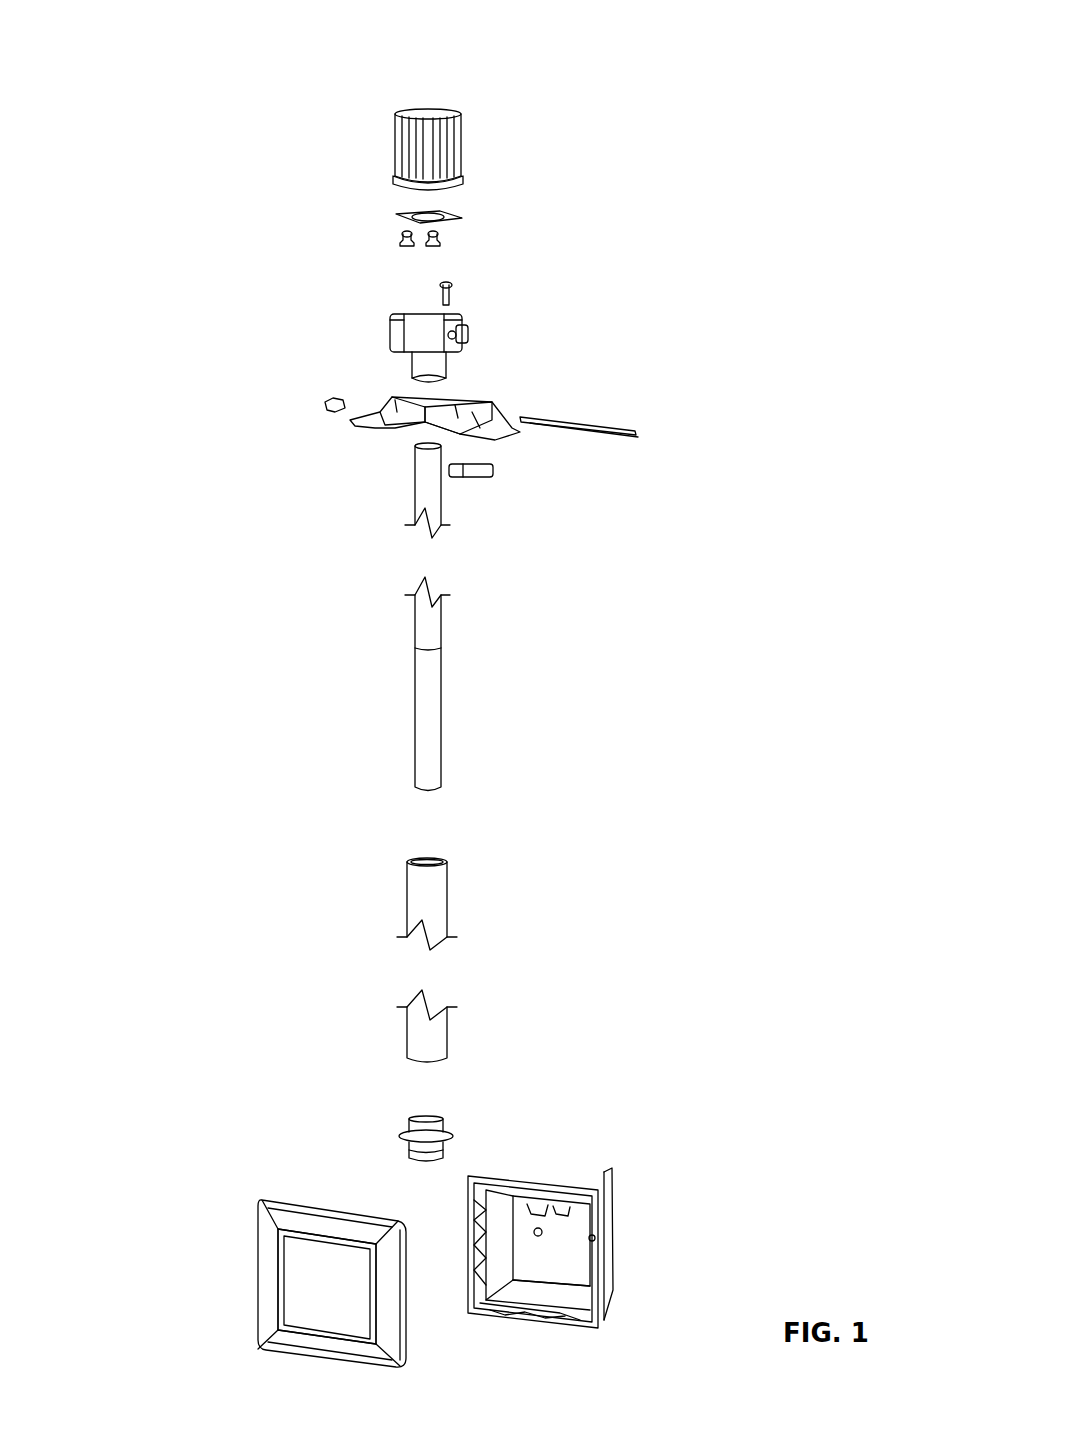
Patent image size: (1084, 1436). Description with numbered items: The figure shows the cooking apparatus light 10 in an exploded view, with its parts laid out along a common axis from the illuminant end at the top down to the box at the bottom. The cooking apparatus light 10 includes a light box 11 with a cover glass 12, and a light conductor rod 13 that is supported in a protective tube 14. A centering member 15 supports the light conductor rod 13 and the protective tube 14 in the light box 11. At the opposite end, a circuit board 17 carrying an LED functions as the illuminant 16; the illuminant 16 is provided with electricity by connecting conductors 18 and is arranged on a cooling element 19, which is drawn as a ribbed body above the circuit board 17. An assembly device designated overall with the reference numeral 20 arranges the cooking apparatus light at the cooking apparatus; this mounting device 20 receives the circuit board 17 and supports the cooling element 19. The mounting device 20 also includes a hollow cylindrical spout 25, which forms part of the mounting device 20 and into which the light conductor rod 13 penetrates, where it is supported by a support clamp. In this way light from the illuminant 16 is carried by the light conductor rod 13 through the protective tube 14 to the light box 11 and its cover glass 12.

The cooking apparatus light 10 is at (752, 103).
The light box 11 is at (650, 1220).
The cover glass 12 is at (290, 1292).
The light conductor rod 13 is at (460, 729).
The protective tube 14 is at (467, 894).
The centering member 15 is at (480, 1134).
The illuminant 16 is at (473, 210).
The circuit board 17 is at (463, 219).
The connecting conductors 18 is at (620, 410).
The cooling element 19 is at (493, 132).
The assembly device 20 is at (360, 329).
The hollow cylindrical spout 25 is at (402, 364).